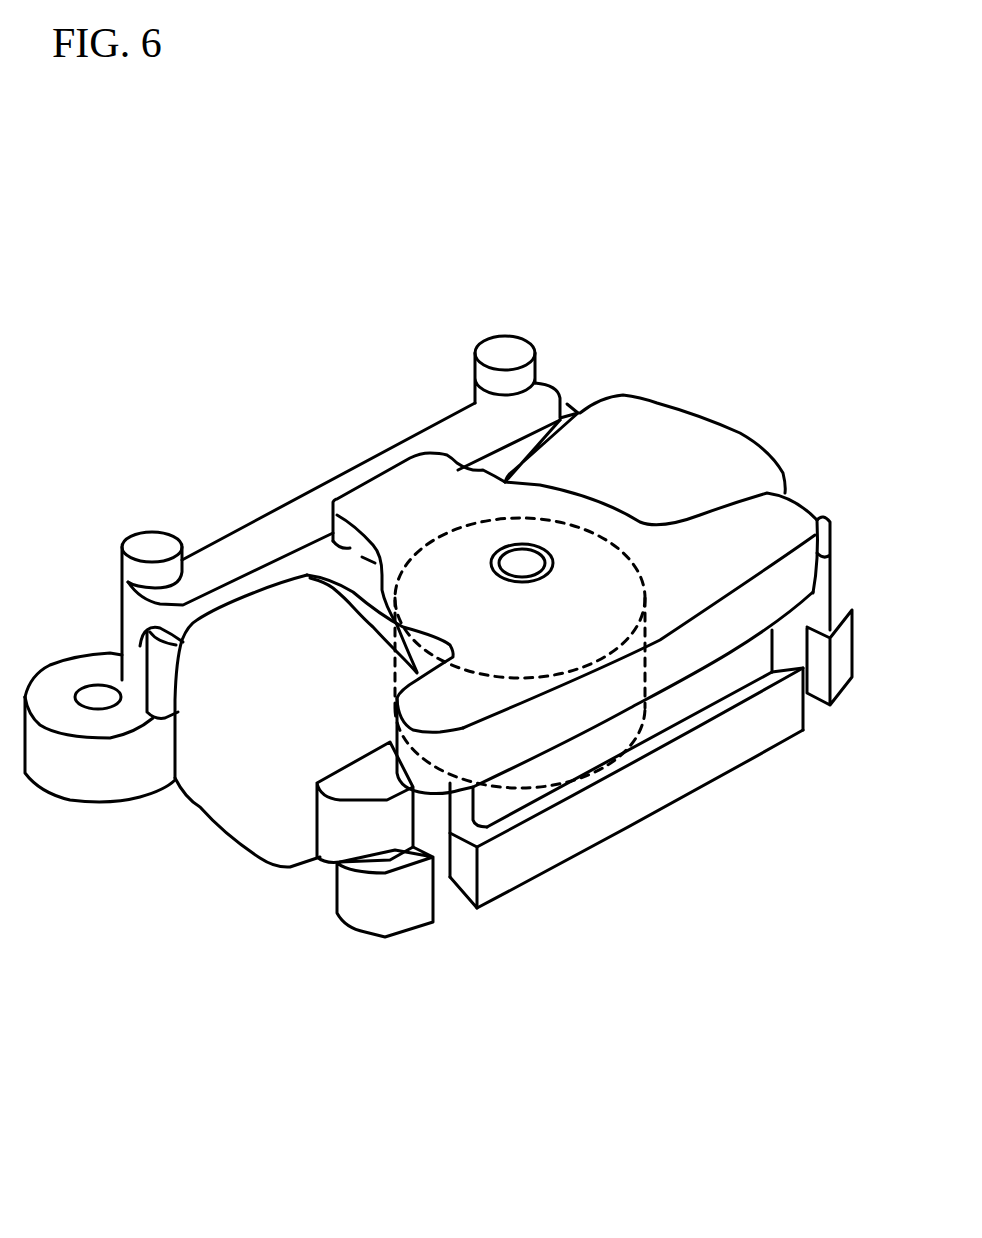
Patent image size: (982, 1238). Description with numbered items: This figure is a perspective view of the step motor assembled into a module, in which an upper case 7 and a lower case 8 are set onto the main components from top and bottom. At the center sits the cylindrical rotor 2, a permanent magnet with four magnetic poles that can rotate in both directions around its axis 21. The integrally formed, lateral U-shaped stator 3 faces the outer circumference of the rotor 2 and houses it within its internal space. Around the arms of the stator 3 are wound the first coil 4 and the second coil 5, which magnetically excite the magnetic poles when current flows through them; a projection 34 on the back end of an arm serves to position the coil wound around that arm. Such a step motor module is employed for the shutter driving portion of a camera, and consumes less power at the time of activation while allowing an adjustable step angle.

The rotor 2 is at (608, 522).
The axis 21 is at (522, 563).
The stator 3 is at (347, 818).
The first coil 4 is at (707, 460).
The second coil 5 is at (243, 757).
The upper case 7 is at (397, 498).
The lower case 8 is at (645, 812).
The projection 34 is at (153, 680).